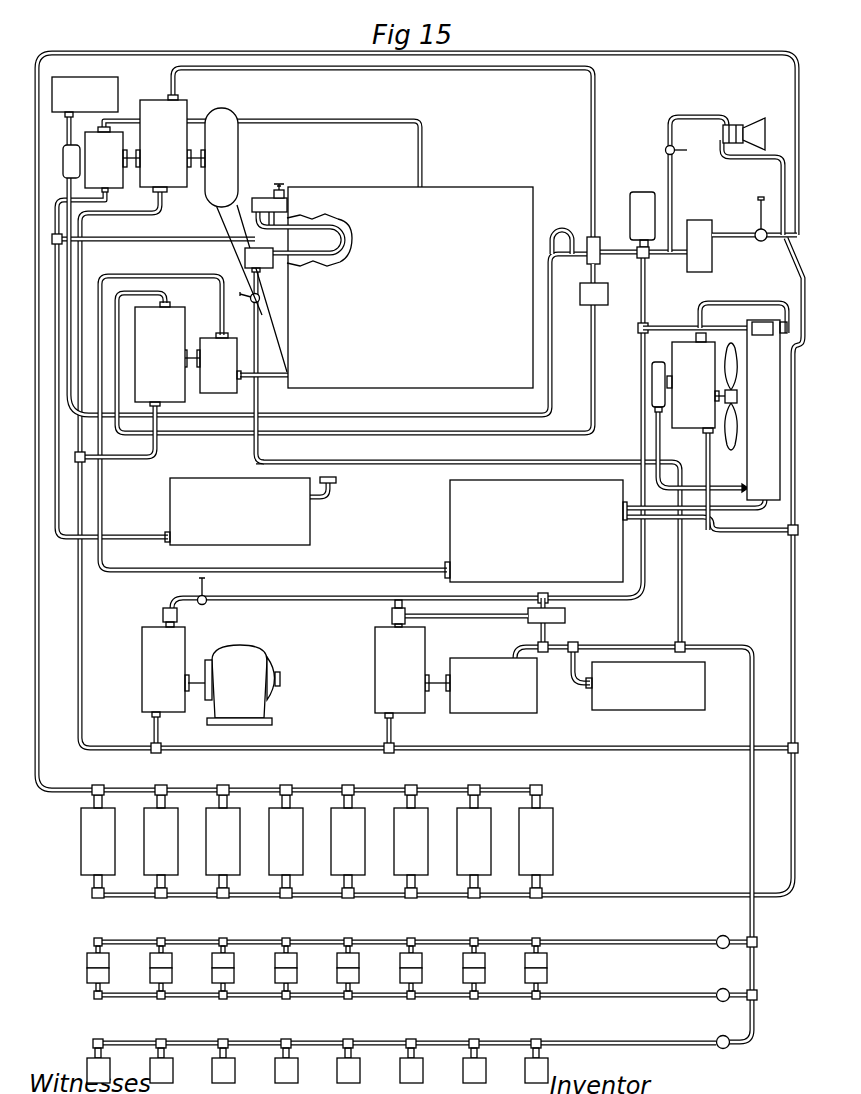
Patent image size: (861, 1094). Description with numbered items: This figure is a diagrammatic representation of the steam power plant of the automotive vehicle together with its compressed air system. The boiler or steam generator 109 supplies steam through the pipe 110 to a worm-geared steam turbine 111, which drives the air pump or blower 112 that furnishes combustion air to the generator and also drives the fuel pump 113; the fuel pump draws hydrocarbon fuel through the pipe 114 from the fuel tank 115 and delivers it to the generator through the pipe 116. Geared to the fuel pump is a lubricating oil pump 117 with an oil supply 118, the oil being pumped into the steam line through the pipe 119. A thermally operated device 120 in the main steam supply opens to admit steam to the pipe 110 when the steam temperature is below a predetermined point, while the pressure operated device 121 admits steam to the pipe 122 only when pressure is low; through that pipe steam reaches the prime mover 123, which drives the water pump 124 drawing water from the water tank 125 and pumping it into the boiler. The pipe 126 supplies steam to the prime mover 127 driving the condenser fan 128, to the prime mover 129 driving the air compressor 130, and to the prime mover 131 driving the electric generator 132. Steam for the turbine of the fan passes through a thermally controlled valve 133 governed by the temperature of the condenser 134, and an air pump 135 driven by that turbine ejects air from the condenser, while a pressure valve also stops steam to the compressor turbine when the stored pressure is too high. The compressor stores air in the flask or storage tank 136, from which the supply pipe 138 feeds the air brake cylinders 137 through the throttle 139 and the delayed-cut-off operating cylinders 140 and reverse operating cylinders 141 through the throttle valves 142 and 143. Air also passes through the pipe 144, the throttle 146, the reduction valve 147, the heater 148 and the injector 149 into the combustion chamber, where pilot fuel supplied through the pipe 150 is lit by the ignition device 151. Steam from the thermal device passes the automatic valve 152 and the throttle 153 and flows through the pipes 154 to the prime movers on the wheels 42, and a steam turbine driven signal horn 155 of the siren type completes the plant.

The wheels 42 is at (317, 841).
The boiler or steam generator 109 is at (410, 287).
The pipe 110 is at (591, 148).
The worm-geared steam turbine 111 is at (163, 143).
The air pump or blower 112 is at (237, 240).
The fuel pump 113 is at (112, 159).
The pipe 114 is at (130, 530).
The fuel tank 115 is at (250, 511).
The pipe 116 is at (322, 123).
The lubricating oil pump 117 is at (71, 161).
The supply of oil 118 is at (85, 97).
The pipe 119 is at (415, 417).
The thermally operated device 120 is at (583, 234).
The pressure operated device 121 is at (594, 284).
The pipe 122 is at (591, 366).
The prime mover 123 is at (130, 382).
The water pump 124 is at (273, 423).
The water tank 125 is at (621, 531).
The pipe 126 is at (648, 287).
The prime mover 127 is at (691, 431).
The condenser fan 128 is at (733, 450).
The prime mover 129 is at (451, 676).
The air compressor 130 is at (481, 685).
The prime mover 131 is at (163, 680).
The electric generator 132 is at (232, 685).
The thermally controlled valve 133 is at (762, 322).
The condenser 134 is at (767, 410).
The air pump 135 is at (650, 384).
The flask or storage tank 136 is at (636, 676).
The air brake cylinders 137 is at (554, 1072).
The supply pipe 138 is at (748, 807).
The throttle 139 is at (717, 1049).
The delayed-cut-off operating cylinders 140 is at (553, 961).
The reverse operating cylinders 141 is at (553, 979).
The throttle valve 142 is at (717, 946).
The throttle valve 143 is at (717, 992).
The pipe 144 is at (401, 465).
The throttle 146 is at (244, 367).
The reduction valve 147 is at (259, 260).
The heater 148 is at (345, 240).
The injector 149 is at (280, 205).
The pipe 150 is at (158, 241).
The ignition device 151 is at (276, 185).
The automatic valve 152 is at (699, 246).
The throttle 153 is at (757, 228).
The pipe or pipes 154 is at (474, 55).
The steam turbine driven signal horn 155 is at (740, 143).